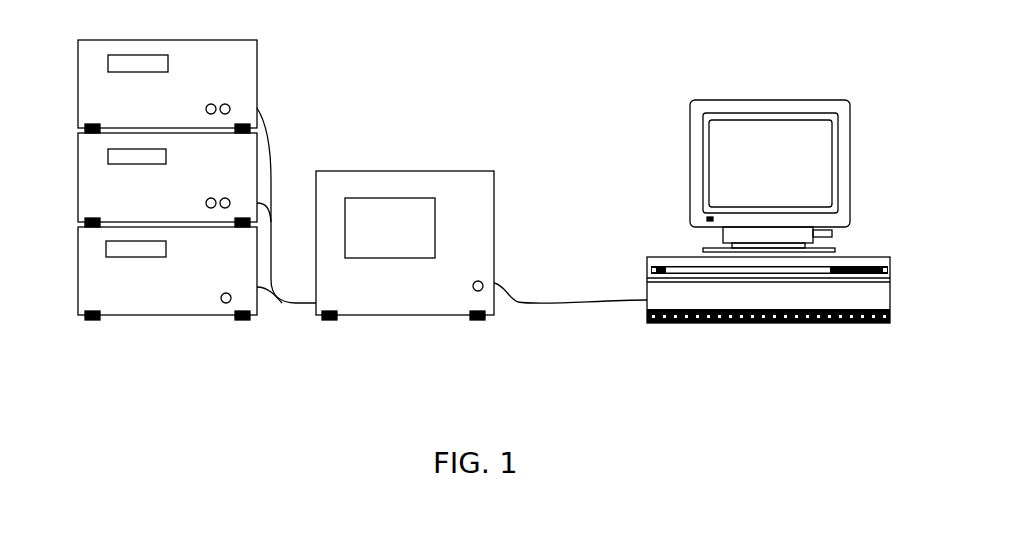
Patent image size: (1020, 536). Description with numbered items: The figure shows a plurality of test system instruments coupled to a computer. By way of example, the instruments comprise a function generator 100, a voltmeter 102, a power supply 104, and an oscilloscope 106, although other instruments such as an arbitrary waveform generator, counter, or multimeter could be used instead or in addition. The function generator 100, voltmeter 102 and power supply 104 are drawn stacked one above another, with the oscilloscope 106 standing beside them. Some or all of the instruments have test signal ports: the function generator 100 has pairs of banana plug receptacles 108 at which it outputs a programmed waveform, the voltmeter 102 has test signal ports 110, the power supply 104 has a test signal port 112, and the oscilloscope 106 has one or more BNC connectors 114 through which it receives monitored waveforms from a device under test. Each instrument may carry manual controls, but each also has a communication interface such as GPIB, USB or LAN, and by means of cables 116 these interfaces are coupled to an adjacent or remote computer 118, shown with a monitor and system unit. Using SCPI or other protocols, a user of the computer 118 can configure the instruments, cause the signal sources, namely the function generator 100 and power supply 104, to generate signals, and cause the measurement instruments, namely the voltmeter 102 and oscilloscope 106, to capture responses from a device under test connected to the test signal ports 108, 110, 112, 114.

The function generator 100 is at (78, 67).
The voltmeter 102 is at (78, 172).
The power supply 104 is at (78, 265).
The oscilloscope 106 is at (433, 169).
The banana plug receptacles 108 is at (220, 97).
The test signal ports 110 is at (218, 190).
The test signal port 112 is at (223, 302).
The BNC connectors 114 is at (478, 281).
The cables 116 is at (293, 304).
The computer 118 is at (865, 257).